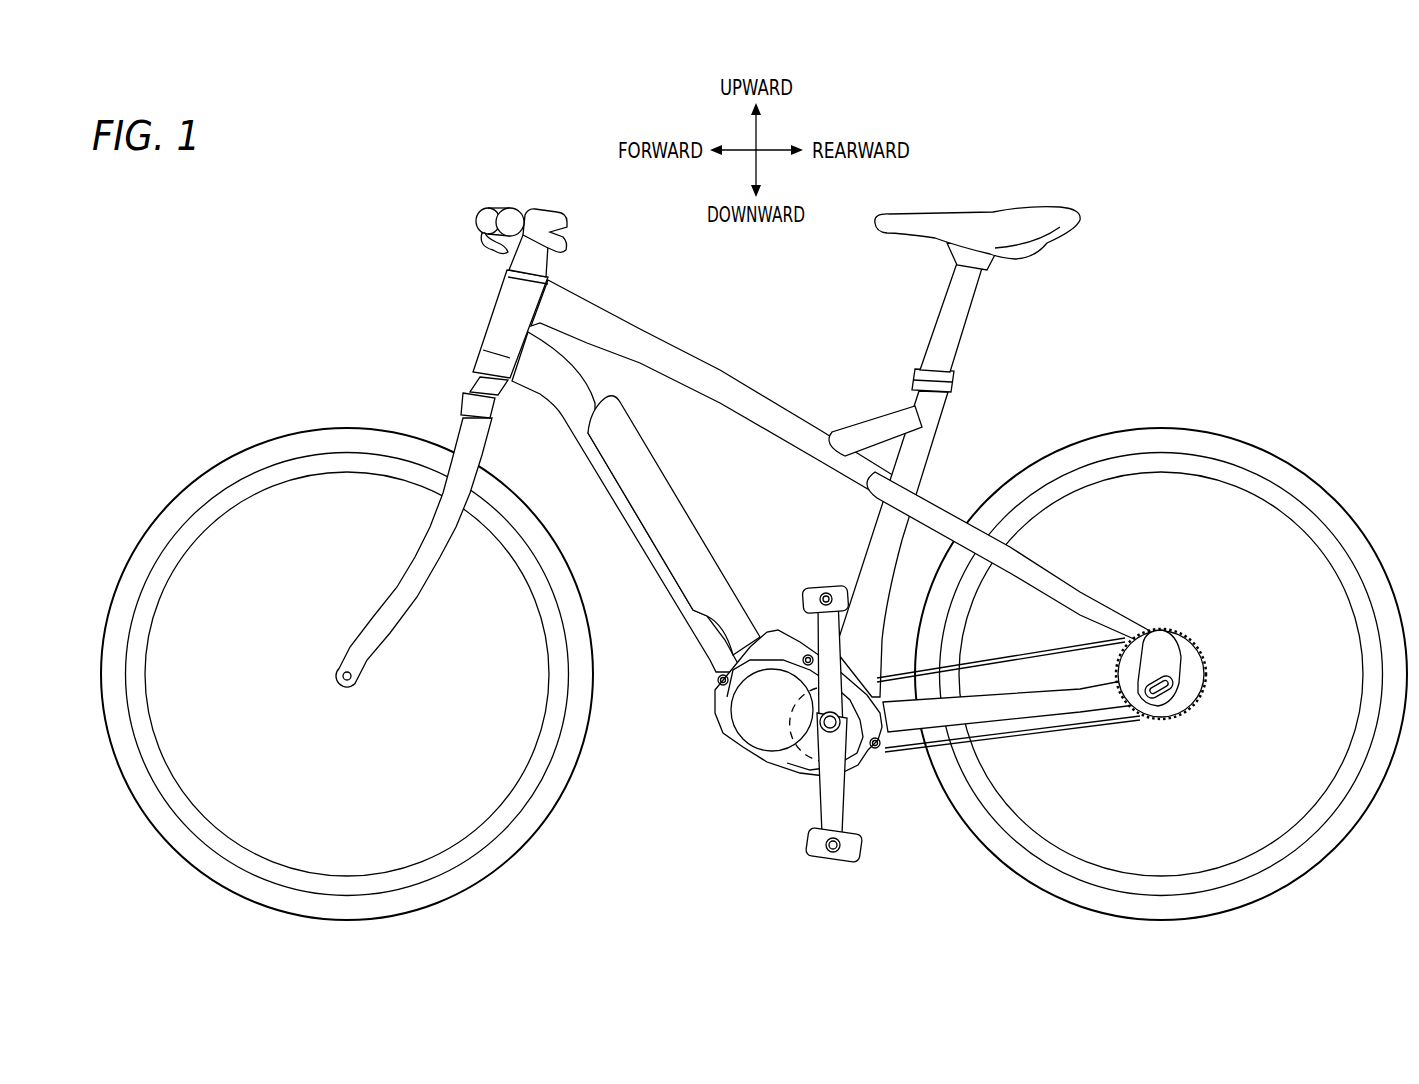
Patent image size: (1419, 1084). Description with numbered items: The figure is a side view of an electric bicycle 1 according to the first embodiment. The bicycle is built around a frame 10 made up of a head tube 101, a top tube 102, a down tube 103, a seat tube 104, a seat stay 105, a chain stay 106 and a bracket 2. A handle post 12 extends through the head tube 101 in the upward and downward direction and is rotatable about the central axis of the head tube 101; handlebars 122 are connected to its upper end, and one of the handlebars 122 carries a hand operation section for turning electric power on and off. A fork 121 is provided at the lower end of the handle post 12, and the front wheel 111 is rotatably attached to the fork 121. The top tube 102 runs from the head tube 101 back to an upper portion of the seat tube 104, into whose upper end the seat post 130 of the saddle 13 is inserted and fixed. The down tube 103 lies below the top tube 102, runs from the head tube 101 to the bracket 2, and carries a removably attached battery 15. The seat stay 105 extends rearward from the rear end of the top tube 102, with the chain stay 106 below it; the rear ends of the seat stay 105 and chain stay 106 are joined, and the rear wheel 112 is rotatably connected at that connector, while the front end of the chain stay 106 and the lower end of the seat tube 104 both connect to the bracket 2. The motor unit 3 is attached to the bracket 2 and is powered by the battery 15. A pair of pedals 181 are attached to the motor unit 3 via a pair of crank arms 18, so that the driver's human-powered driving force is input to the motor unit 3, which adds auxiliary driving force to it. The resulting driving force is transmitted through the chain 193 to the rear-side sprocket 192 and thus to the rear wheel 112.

The electric bicycle 1 is at (1240, 192).
The bracket 2 is at (773, 636).
The motor unit 3 is at (750, 733).
The frame 10 is at (785, 527).
The handle post 12 is at (540, 263).
The saddle 13 is at (993, 222).
The battery 15 is at (682, 526).
The crank arms 18 is at (822, 612).
The head tube 101 is at (500, 322).
The top tube 102 is at (771, 406).
The down tube 103 is at (567, 410).
The seat tube 104 is at (924, 432).
The seat stay 105 is at (942, 515).
The chain stay 106 is at (1035, 710).
The front wheel 111 is at (495, 855).
The rear wheel 112 is at (1222, 438).
The fork 121 is at (396, 613).
The handlebars 122 is at (486, 208).
The seat post 130 is at (960, 317).
The pedals 181 is at (842, 588).
The rear-side sprocket 192 is at (1190, 646).
The chain 193 is at (1110, 724).